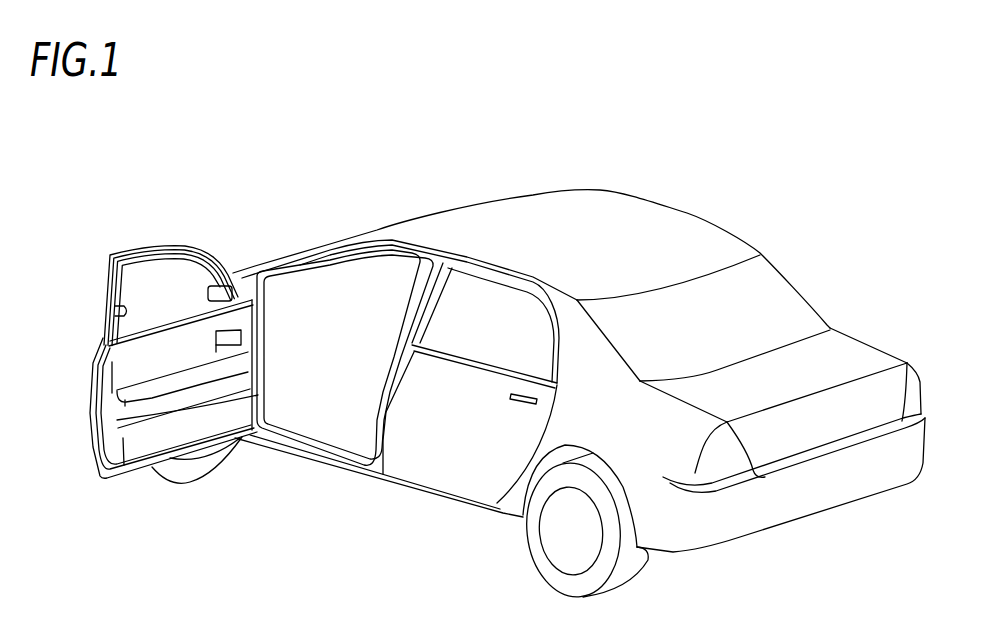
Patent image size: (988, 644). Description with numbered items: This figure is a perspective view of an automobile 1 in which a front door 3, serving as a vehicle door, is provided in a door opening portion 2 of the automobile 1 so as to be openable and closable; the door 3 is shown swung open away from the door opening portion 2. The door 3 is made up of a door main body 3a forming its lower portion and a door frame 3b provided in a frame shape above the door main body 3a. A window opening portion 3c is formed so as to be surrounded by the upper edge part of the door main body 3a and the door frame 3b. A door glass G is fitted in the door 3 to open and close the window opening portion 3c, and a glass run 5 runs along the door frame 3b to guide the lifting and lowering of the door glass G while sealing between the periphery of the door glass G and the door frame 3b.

The automobile 1 is at (279, 189).
The door opening portion 2 is at (388, 253).
The front door 3 is at (79, 250).
The door main body 3a is at (90, 416).
The door frame 3b is at (157, 250).
The window opening portion 3c is at (113, 309).
The glass run 5 is at (128, 253).
The door glass G is at (173, 283).